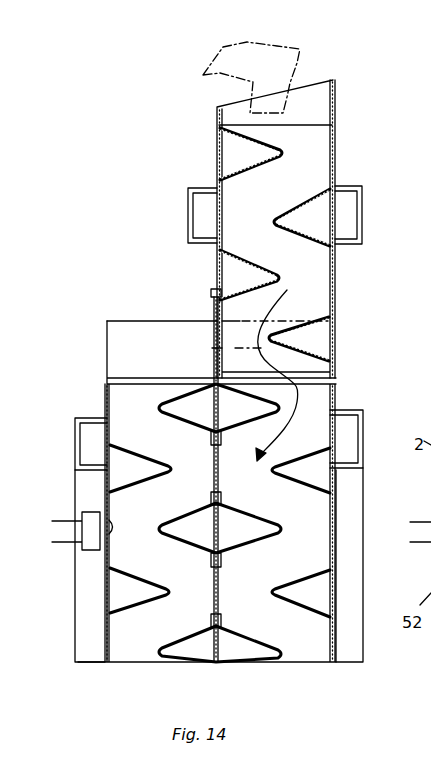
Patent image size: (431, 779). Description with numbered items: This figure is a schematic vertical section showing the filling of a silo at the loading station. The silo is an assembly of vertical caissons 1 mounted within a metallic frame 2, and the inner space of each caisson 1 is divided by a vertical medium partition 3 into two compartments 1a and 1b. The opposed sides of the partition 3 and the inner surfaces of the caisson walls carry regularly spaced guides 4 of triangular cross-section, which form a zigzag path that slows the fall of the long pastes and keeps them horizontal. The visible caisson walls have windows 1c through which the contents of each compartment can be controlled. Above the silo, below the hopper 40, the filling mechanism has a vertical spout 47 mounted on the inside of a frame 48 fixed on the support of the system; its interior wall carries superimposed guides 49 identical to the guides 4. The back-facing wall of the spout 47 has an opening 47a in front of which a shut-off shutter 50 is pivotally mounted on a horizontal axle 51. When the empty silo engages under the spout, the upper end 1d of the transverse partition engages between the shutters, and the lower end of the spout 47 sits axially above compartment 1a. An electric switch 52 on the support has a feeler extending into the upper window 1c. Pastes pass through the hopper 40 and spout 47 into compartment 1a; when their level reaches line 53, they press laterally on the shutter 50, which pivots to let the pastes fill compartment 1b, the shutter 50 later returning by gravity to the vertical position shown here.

The vertical caisson 1 is at (108, 392).
The compartment 1a is at (290, 555).
The compartment 1b is at (142, 647).
The window 1c is at (116, 522).
The upper end of transverse partition 1d is at (118, 335).
The metallic frame 2 is at (80, 434).
The vertical medium partition 3 is at (220, 652).
The guide 4 is at (307, 620).
The hopper 40 is at (288, 60).
The vertical spout 47 is at (336, 131).
The opening 47a is at (231, 340).
The frame 48 is at (188, 204).
The superimposed guide 49 is at (262, 158).
The shut-off shutter 50 is at (214, 350).
The horizontal axle 51 is at (213, 292).
The electric switch 52 is at (90, 540).
The line 53 is at (238, 351).